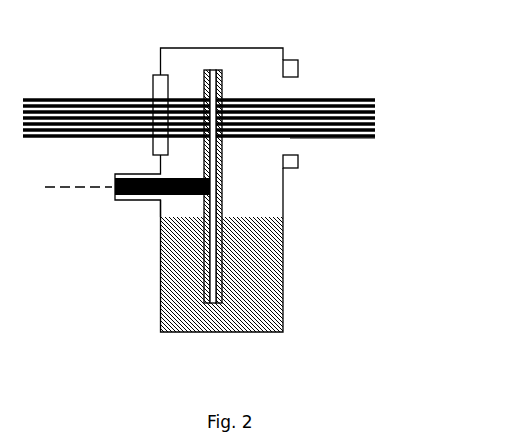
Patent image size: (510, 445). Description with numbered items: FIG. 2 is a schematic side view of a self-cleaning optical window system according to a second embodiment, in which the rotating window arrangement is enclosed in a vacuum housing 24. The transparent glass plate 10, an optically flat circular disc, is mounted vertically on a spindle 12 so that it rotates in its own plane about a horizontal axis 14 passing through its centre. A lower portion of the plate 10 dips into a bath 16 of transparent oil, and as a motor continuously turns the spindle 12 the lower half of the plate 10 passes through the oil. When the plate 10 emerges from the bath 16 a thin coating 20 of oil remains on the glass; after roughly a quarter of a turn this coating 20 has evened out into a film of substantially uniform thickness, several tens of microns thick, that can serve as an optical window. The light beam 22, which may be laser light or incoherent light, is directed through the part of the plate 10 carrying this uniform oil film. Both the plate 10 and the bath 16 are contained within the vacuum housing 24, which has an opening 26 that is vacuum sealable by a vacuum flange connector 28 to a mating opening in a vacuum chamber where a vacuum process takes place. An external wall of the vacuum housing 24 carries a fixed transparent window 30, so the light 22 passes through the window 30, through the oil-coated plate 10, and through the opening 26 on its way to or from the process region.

The transparent glass plate 10 is at (203, 258).
The spindle 12 is at (216, 188).
The horizontal axis 14 is at (77, 195).
The bath of transparent oil 16 is at (234, 314).
The oil coating 20 is at (229, 92).
The light beam 22 is at (380, 120).
The vacuum housing 24 is at (240, 44).
The opening 26 is at (294, 146).
The vacuum flange connector 28 is at (303, 68).
The fixed transparent window 30 is at (153, 85).